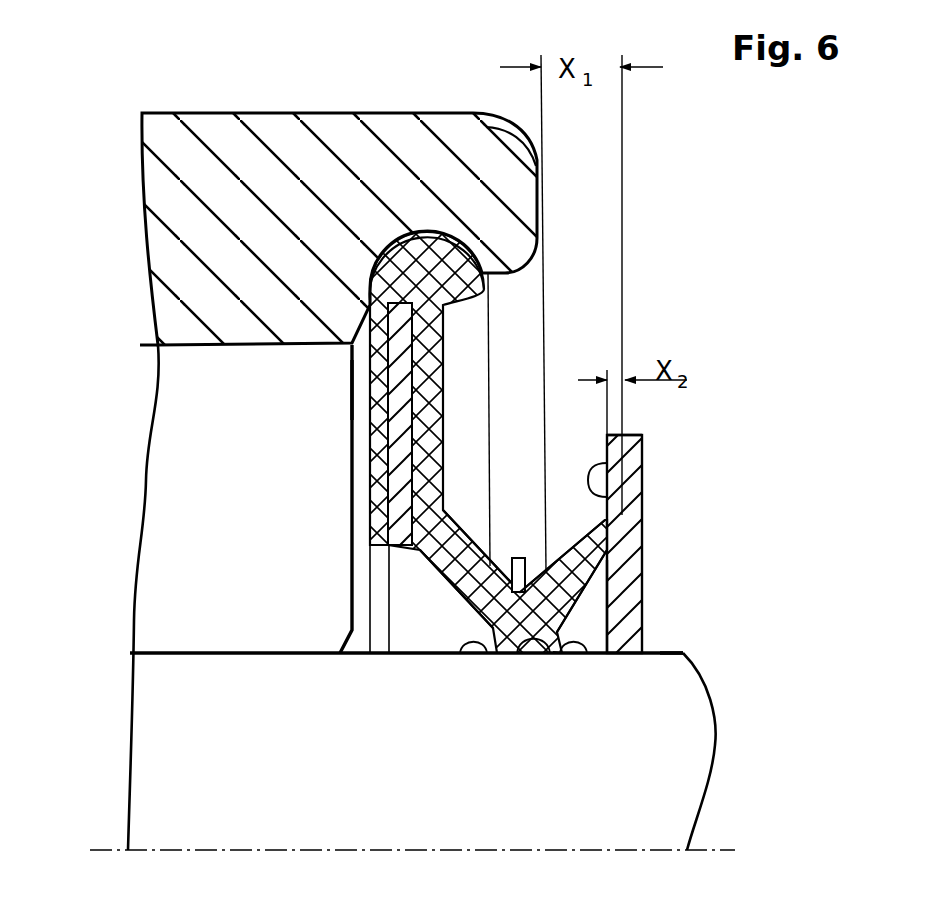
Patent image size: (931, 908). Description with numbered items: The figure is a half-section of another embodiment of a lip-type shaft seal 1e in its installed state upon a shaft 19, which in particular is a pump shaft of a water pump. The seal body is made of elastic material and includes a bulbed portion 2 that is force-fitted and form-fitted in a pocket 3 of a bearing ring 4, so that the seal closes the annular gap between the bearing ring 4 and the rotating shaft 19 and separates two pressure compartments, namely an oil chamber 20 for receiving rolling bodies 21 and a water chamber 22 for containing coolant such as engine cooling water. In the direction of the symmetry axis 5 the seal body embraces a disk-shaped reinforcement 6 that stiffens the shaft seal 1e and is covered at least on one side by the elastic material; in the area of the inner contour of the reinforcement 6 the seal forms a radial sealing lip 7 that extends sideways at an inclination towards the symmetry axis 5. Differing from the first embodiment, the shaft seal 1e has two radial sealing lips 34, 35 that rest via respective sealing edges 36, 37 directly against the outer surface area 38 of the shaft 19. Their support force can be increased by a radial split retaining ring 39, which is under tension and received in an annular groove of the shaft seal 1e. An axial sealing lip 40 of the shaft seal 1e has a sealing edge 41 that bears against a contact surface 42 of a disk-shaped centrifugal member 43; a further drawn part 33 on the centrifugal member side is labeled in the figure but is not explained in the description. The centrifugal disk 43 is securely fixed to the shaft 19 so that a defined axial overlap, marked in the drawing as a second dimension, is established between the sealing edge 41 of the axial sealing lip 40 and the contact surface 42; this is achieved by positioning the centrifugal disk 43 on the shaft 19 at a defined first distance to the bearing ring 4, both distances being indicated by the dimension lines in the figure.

The lip-type shaft seal 1e is at (333, 417).
The bulbed portion 2 is at (487, 289).
The pocket 3 is at (497, 244).
The bearing ring 4 is at (523, 198).
The symmetry axis 5 is at (715, 850).
The disk-shaped reinforcement 6 is at (397, 446).
The radial sealing lip 7 is at (440, 566).
The shaft 19 is at (288, 773).
The oil chamber 20 is at (182, 477).
The rolling bodies 21 is at (246, 564).
The water chamber 22 is at (598, 437).
The support ring lower part 33 is at (642, 596).
The radial sealing lip 34 is at (460, 654).
The radial sealing lip 35 is at (590, 654).
The sealing edge 36 is at (497, 654).
The sealing edge 37 is at (553, 654).
The outer surface area 38 is at (667, 652).
The radial split retaining ring 39 is at (513, 558).
The axial sealing lip 40 is at (622, 560).
The sealing edge 41 is at (642, 512).
The contact surface 42 is at (642, 457).
The disk-shaped centrifugal member 43 is at (642, 447).